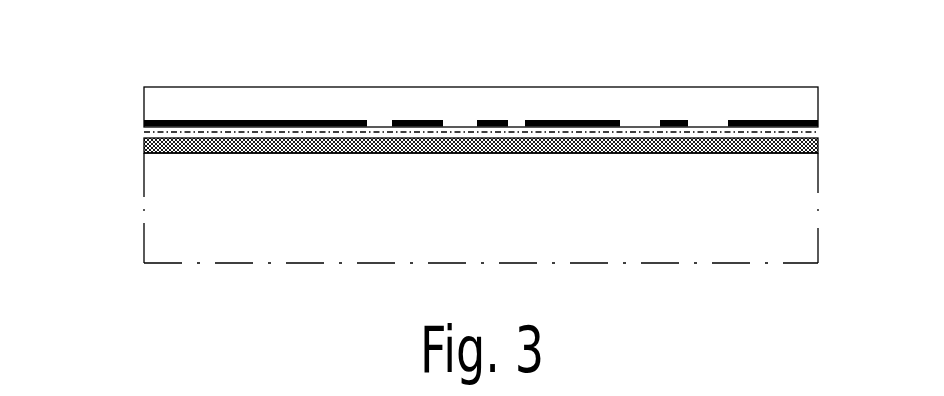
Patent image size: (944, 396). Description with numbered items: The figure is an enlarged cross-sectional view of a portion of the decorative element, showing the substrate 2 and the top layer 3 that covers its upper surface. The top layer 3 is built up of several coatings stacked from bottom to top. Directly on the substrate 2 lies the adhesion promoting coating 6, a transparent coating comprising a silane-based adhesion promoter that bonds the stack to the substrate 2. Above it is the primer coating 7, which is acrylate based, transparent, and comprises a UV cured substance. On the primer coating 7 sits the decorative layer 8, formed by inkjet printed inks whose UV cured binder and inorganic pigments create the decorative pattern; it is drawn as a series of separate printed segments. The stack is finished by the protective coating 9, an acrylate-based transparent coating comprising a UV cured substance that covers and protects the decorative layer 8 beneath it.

The substrate 2 is at (183, 225).
The top layer 3 is at (459, 117).
The adhesion promoting coating 6 is at (145, 146).
The primer coating 7 is at (150, 132).
The decorative layer 8 is at (407, 120).
The protective coating 9 is at (222, 102).